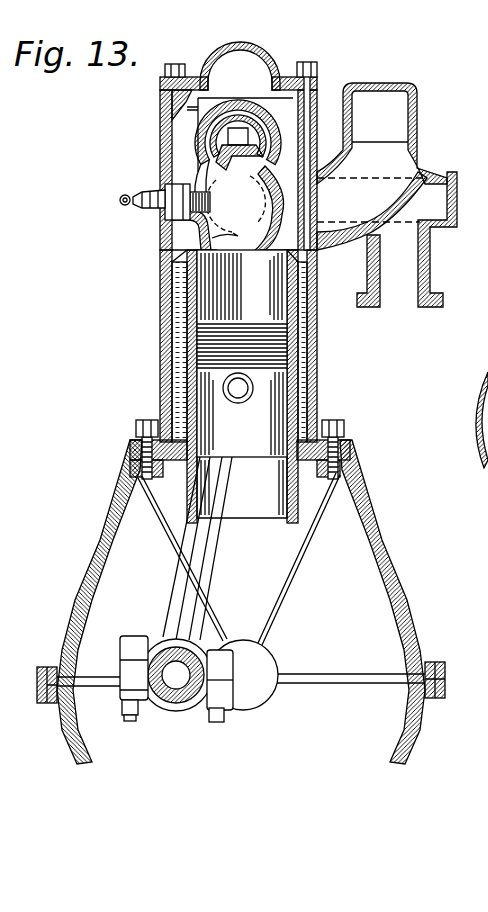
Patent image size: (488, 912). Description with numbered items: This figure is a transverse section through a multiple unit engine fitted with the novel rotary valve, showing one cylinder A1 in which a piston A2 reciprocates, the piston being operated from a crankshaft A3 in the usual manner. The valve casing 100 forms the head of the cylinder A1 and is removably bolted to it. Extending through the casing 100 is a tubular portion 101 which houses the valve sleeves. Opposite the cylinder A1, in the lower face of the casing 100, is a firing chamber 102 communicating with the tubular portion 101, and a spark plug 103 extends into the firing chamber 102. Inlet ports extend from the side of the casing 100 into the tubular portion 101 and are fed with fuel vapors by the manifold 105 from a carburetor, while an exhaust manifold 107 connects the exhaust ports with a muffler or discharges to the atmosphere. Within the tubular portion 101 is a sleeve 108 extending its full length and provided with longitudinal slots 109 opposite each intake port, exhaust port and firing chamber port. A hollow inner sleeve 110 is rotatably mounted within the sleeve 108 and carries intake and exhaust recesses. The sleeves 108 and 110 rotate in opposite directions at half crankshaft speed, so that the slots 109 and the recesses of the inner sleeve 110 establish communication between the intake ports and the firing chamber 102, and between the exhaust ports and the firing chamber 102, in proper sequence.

The valve casing 100 is at (319, 94).
The tubular portion 101 is at (198, 130).
The firing chamber 102 is at (168, 238).
The spark plug 103 is at (130, 204).
The manifold 105 is at (432, 250).
The exhaust manifold 107 is at (414, 106).
The sleeve 108 is at (250, 104).
The longitudinal slot 109 is at (239, 149).
The hollow inner sleeve 110 is at (212, 150).
The cylinder A1 is at (224, 292).
The piston A2 is at (206, 388).
The crankshaft A3 is at (259, 668).